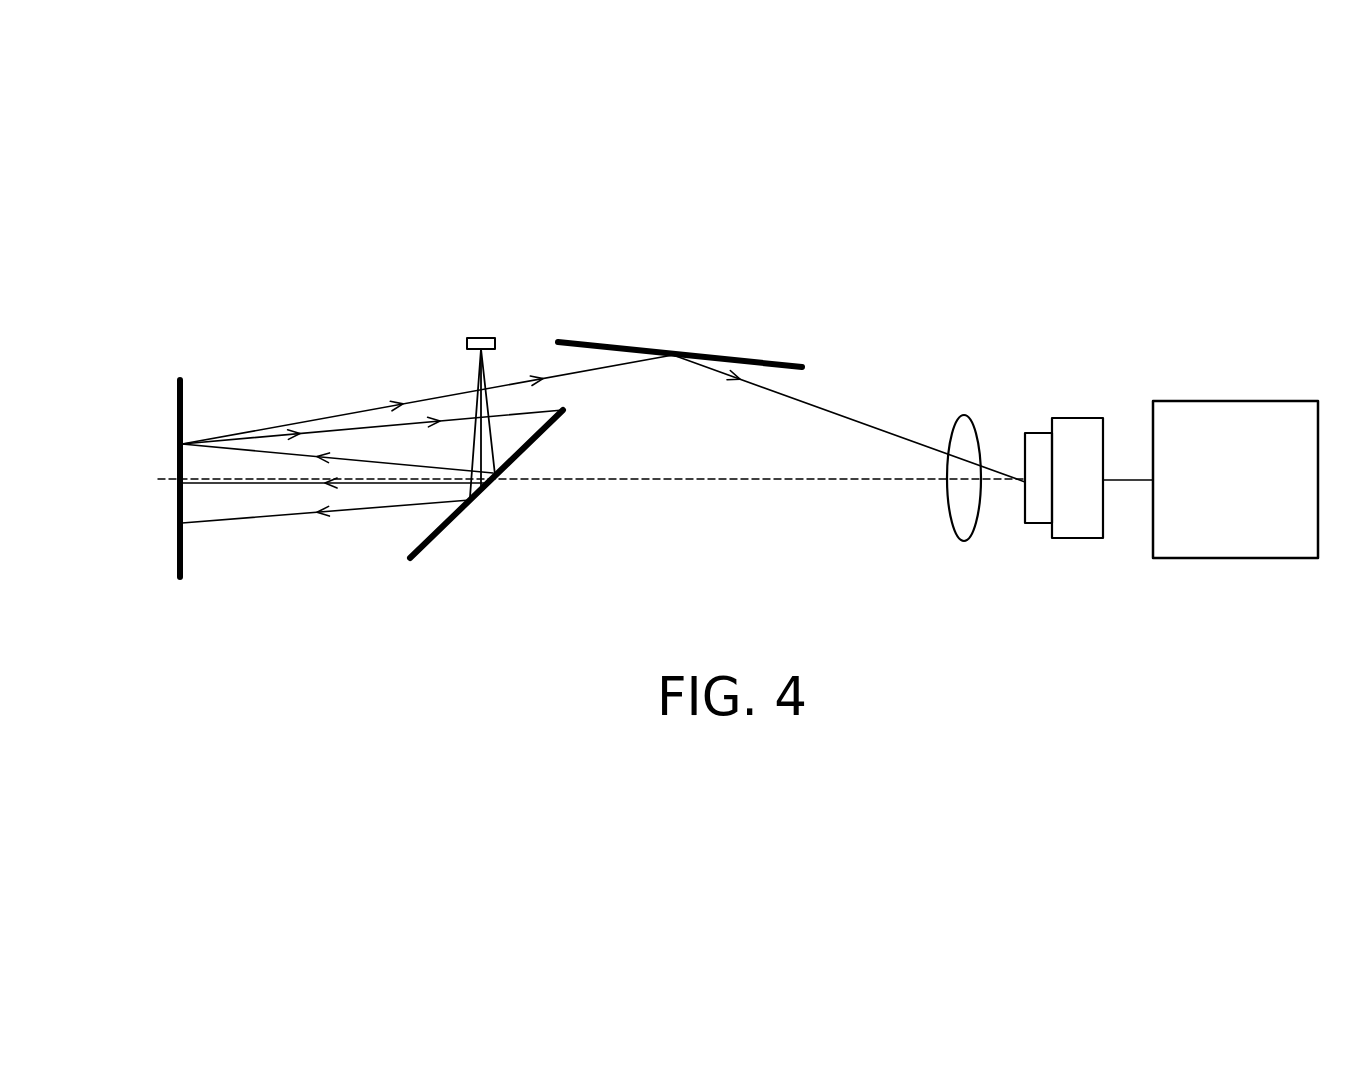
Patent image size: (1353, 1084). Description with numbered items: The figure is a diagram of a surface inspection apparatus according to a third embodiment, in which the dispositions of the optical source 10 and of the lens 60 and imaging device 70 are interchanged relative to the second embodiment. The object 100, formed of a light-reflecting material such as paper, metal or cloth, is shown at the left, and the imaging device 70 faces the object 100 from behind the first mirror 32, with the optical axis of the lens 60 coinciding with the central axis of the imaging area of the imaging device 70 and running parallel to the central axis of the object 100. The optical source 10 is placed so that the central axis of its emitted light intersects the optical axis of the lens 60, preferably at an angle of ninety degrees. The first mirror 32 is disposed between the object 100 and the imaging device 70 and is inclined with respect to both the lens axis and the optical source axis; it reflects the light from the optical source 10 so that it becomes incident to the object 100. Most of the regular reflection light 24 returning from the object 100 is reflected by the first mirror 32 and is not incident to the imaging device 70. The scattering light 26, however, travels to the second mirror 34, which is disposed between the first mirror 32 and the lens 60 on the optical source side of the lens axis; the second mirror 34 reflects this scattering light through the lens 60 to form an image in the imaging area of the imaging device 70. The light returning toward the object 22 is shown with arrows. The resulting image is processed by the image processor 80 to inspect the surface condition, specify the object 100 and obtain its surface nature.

The optical source 10 is at (495, 339).
The reflected light 22 is at (268, 521).
The regular reflection light 24 is at (335, 432).
The scattering light 26 is at (362, 410).
The first mirror 32 is at (438, 533).
The second mirror 34 is at (776, 362).
The lens 60 is at (948, 508).
The imaging device 70 is at (1080, 418).
The image processor 80 is at (1186, 401).
The object 100 is at (180, 551).